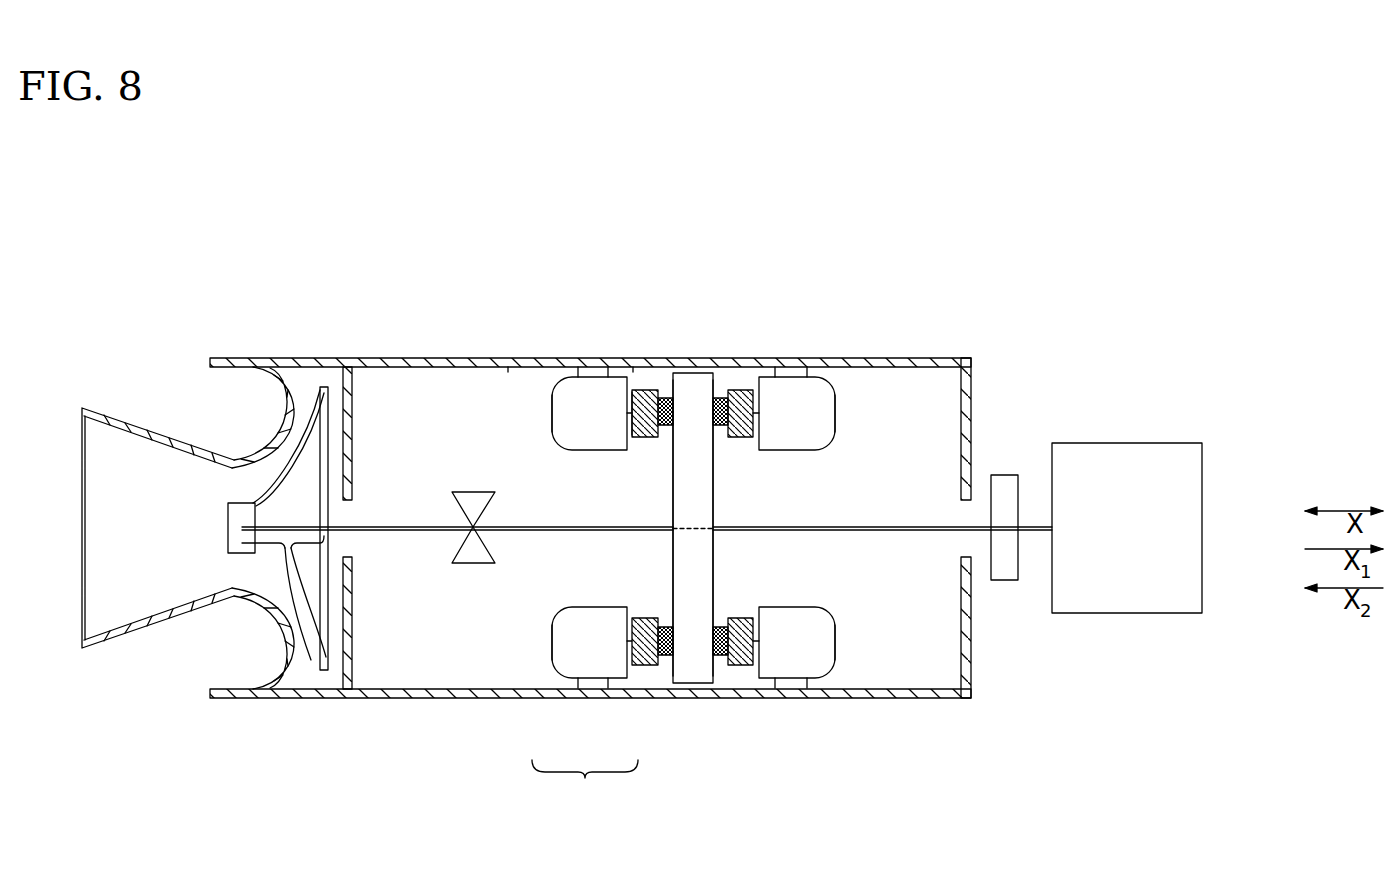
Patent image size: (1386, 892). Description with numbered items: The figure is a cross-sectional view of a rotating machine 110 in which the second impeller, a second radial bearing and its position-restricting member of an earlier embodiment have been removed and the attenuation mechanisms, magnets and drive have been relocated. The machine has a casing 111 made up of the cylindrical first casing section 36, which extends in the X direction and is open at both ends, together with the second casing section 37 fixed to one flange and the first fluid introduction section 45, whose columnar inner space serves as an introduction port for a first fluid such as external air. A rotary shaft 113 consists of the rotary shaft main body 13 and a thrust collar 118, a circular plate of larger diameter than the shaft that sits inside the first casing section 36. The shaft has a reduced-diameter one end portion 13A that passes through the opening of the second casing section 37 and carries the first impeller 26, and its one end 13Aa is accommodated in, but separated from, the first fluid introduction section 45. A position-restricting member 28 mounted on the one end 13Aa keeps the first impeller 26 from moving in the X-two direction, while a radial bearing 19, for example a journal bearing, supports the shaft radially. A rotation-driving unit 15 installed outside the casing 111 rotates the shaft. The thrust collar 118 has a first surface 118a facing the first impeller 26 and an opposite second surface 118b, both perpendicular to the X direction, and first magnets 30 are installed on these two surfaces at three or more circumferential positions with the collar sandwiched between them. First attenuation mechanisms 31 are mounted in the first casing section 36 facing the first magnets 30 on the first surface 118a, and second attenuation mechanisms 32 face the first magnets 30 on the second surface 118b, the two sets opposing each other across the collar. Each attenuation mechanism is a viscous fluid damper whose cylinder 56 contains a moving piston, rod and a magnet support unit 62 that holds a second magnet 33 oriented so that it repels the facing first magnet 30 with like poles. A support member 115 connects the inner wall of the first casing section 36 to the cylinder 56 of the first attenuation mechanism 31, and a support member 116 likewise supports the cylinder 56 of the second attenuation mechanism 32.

The rotating machine 110 is at (63, 148).
The first fluid introduction section 45 is at (138, 432).
The one end 13Aa is at (242, 520).
The second casing section 37 is at (313, 352).
The first impeller 26 is at (318, 450).
The position-restricting member 28 is at (240, 548).
The one end portion 13A is at (310, 660).
The rotary shaft main body 13 is at (523, 532).
The radial bearing 19 is at (480, 507).
The thrust collar 118 is at (695, 663).
The first surface 118a is at (672, 480).
The second surface 118b is at (713, 478).
The cylinder 56 is at (563, 430).
The support member 115 is at (587, 372).
The support member 116 is at (793, 373).
The second magnet 33 is at (651, 405).
The first magnet 30 is at (720, 400).
The first attenuation mechanism 31 is at (532, 396).
The second attenuation mechanism 32 is at (841, 382).
The casing 111 is at (507, 350).
The first casing section 36 is at (633, 350).
The magnet support unit 62 is at (641, 392).
The rotary shaft 113 is at (585, 785).
The rotation-driving unit 15 is at (1085, 470).